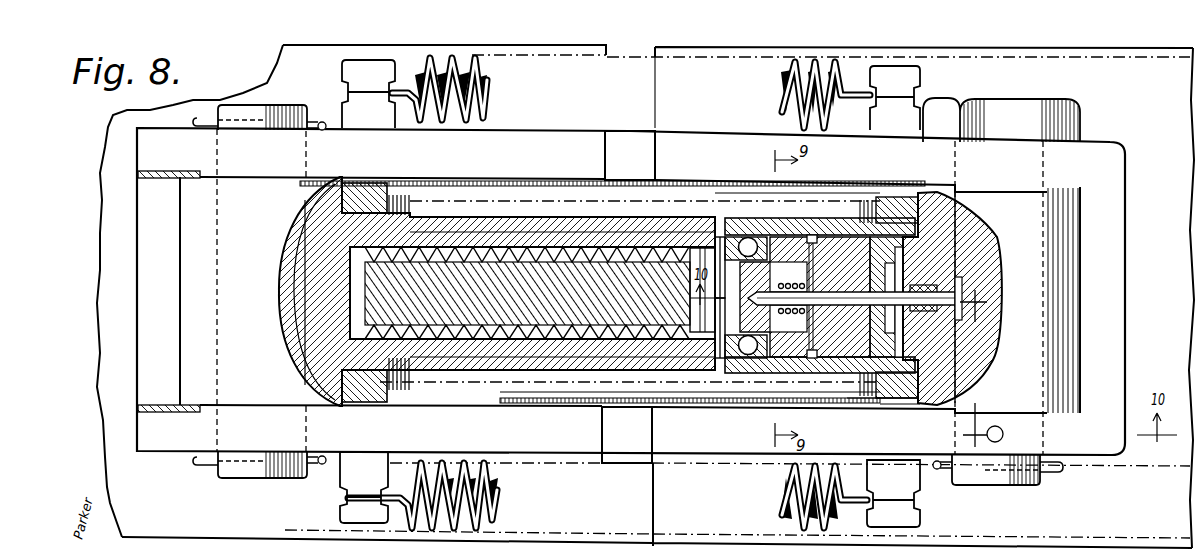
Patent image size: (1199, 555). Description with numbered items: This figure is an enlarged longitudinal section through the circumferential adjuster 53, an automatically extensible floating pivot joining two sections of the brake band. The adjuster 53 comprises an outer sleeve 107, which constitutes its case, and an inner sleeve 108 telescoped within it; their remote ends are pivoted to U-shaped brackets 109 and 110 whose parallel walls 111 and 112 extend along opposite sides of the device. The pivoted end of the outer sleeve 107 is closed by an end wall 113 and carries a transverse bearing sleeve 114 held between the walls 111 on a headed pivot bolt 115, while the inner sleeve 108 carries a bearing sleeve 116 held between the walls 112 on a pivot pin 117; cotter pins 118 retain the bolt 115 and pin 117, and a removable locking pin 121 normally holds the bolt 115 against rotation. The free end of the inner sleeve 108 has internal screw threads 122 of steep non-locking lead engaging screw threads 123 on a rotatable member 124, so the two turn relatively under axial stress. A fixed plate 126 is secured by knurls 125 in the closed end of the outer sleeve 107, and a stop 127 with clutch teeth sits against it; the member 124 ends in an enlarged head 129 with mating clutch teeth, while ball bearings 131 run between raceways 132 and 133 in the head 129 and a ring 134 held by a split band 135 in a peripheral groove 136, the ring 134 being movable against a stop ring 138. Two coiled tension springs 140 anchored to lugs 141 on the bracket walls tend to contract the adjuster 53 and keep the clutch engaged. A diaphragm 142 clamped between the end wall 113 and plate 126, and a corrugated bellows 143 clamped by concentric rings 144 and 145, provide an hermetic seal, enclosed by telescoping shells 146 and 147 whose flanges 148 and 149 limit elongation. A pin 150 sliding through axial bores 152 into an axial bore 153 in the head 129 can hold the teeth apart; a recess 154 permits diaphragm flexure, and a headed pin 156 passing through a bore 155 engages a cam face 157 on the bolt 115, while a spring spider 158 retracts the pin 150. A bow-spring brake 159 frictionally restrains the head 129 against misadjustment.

The circumferential adjuster 53 is at (1103, 130).
The outer sleeve 107 is at (480, 372).
The inner sleeve 108 is at (443, 352).
The bracket 109 is at (1112, 271).
The bracket 110 is at (144, 309).
The parallel walls 111 is at (742, 145).
The parallel walls 112 is at (580, 140).
The end wall 113 is at (927, 240).
The transverse bearing sleeve 114 is at (1067, 228).
The headed pivot bolt 115 is at (998, 478).
The transverse bearing sleeve 116 is at (188, 226).
The pivot pin 117 is at (245, 471).
The cotter pins 118 is at (201, 127).
The removable locking pin 121 is at (993, 443).
The internal screw threads 122 is at (575, 258).
The screw threads 123 is at (487, 250).
The rotatable member 124 is at (687, 373).
The knurls 125 is at (895, 406).
The fixed plate 126 is at (877, 400).
The stop 127 is at (842, 237).
The enlarged head 129 is at (767, 218).
The ball bearings 131 is at (738, 355).
The raceway 132 is at (753, 356).
The raceway 133 is at (745, 238).
The ring 134 is at (746, 352).
The split band 135 is at (715, 238).
The peripheral groove 136 is at (718, 262).
The stop ring 138 is at (740, 244).
The coiled tension springs 140 is at (435, 122).
The lugs 141 is at (342, 73).
The diaphragm 142 is at (903, 260).
The corrugated cylindrical bellows 143 is at (847, 399).
The concentric rings 144 is at (893, 197).
The concentric rings 145 is at (373, 190).
The inner shell 146 is at (808, 193).
The outer shell 147 is at (535, 181).
The outer peripheral flange 148 is at (490, 200).
The inner peripheral flange 149 is at (718, 238).
The pin 150 is at (832, 237).
The axial bores 152 is at (835, 337).
The axial bore 153 is at (777, 358).
The recess 154 is at (905, 340).
The bore 155 is at (927, 342).
The headed pin 156 is at (940, 310).
The transverse cam face 157 is at (962, 287).
The compression spring spider 158 is at (900, 270).
The brake 159 is at (788, 262).